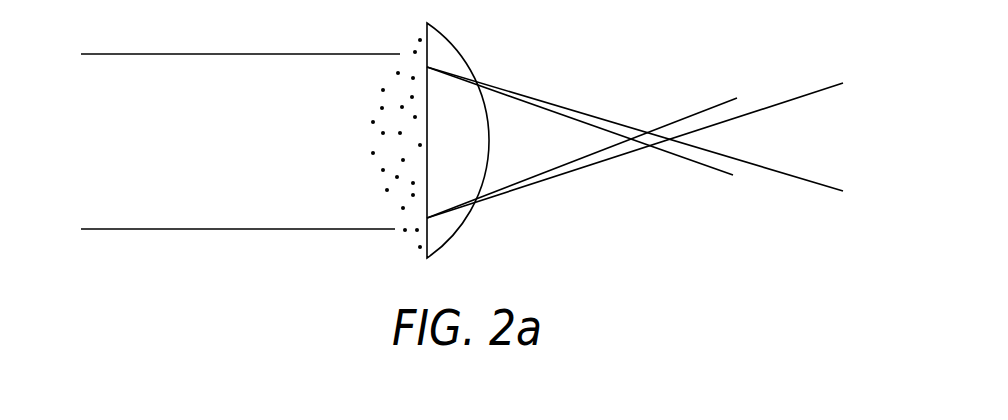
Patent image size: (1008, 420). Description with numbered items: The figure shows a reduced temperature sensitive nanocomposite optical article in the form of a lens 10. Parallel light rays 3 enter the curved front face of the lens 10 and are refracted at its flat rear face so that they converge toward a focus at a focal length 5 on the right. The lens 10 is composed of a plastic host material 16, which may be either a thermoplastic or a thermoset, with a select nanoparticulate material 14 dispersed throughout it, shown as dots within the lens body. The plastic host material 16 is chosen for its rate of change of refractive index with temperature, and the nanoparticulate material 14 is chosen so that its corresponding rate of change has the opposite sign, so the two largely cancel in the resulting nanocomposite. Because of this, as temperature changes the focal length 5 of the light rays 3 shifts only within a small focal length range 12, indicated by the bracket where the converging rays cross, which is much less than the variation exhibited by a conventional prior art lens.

The light rays 3 is at (231, 54).
The lens 10 is at (428, 59).
The plastic host material 16 is at (387, 142).
The nanoparticulate material 14 is at (413, 53).
The focal length 5 is at (667, 140).
The focal length range 12 is at (672, 159).